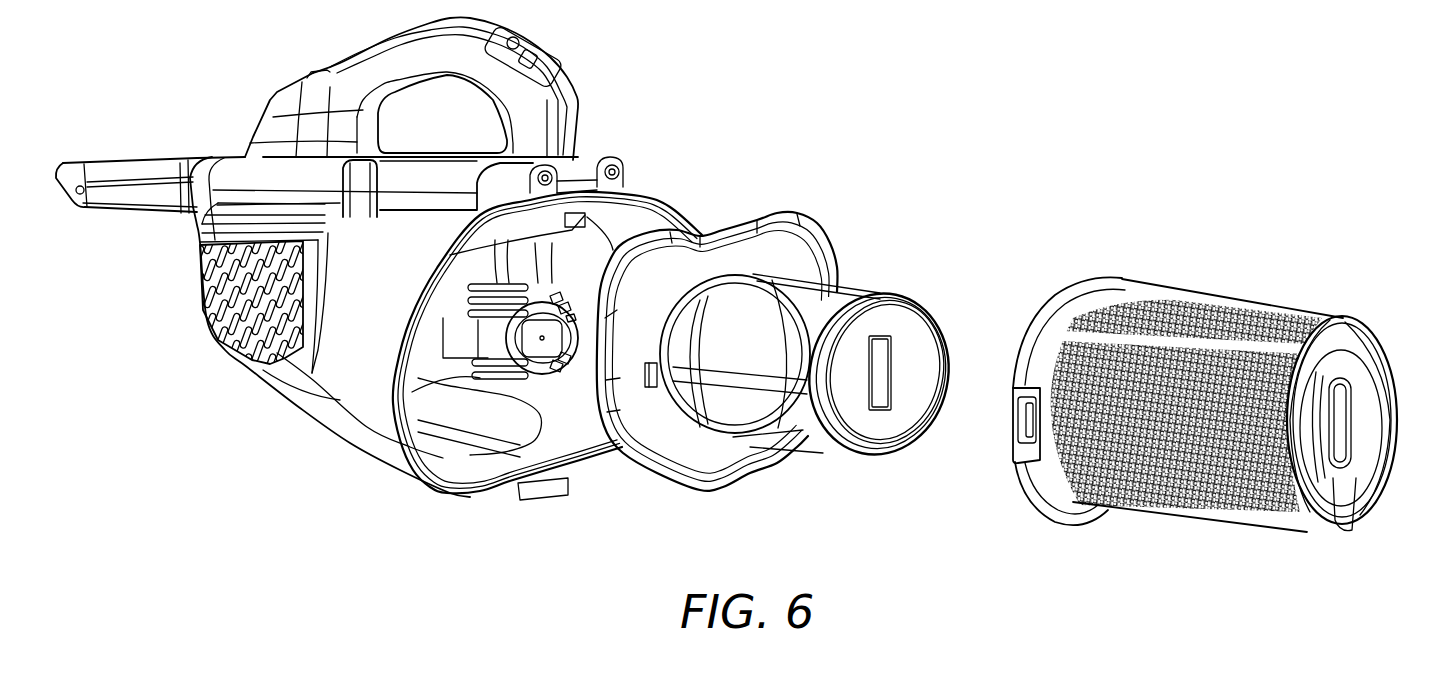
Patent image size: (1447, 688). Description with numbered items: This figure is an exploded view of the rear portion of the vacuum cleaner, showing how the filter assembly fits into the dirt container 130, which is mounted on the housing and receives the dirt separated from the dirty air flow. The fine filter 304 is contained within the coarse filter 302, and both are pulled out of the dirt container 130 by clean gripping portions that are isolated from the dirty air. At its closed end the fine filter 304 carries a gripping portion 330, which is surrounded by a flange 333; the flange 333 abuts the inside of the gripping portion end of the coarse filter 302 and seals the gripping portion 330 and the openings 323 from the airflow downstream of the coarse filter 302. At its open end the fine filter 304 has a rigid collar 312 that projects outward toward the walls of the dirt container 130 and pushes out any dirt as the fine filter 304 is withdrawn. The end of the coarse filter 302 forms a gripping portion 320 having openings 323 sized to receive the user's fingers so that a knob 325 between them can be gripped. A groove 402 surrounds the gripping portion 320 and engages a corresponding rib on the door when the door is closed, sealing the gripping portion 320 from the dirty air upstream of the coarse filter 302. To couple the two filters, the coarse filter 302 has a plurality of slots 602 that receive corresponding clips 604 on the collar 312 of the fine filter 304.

The dirt container 130 is at (350, 387).
The fine filter 304 is at (763, 302).
The collar 312 is at (727, 453).
The gripping portion 330 is at (905, 345).
The flange 333 is at (927, 423).
The clips 604 is at (643, 388).
The slots 602 is at (1027, 460).
The coarse filter 302 is at (1123, 497).
The openings 323 is at (1300, 368).
The knob 325 is at (1350, 393).
The gripping portion 320 is at (1367, 368).
The groove 402 is at (1343, 500).